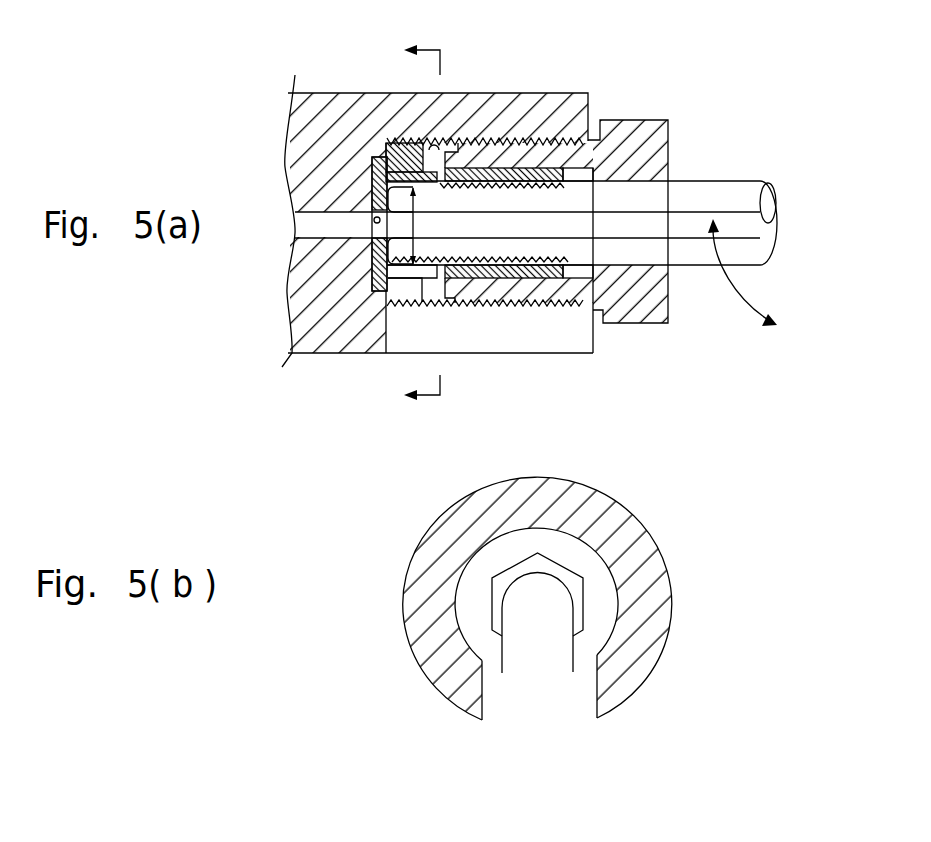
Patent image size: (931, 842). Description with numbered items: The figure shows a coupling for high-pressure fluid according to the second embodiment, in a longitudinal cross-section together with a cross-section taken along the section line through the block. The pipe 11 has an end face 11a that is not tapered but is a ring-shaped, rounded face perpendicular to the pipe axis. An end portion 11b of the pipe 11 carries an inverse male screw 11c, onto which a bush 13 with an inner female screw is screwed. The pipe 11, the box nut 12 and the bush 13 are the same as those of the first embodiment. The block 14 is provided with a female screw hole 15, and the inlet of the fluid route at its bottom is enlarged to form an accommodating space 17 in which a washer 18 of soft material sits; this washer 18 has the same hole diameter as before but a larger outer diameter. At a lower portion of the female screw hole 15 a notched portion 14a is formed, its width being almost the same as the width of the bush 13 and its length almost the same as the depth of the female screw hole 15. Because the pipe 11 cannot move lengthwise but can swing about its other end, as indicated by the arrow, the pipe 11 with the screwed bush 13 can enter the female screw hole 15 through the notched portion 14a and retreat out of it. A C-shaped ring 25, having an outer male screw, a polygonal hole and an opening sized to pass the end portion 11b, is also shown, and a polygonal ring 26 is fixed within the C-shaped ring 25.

In FIG. 5A, the pipe 11 is at (723, 190).
In FIG. 5A, the end face 11a is at (377, 217).
In FIG. 5A, the end portion 11b is at (428, 275).
In FIG. 5A, the inverse male screw 11c is at (515, 282).
In FIG. 5A, the box nut 12 is at (630, 130).
In FIG. 5A, the bush 13 is at (568, 262).
In FIG. 5A, the block 14 is at (343, 108).
In FIG. 5B, the block 14 is at (625, 672).
In FIG. 5A, the notched portion 14a is at (494, 290).
In FIG. 5A, the female screw hole 15 is at (437, 143).
In FIG. 5A, the accommodating space 17 is at (373, 215).
In FIG. 5A, the washer 18 is at (375, 245).
In FIG. 5A, the C-shaped ring 25 is at (387, 300).
In FIG. 5B, the C-shaped ring 25 is at (598, 607).
In FIG. 5A, the polygonal ring 26 is at (372, 158).
In FIG. 5B, the polygonal ring 26 is at (560, 573).